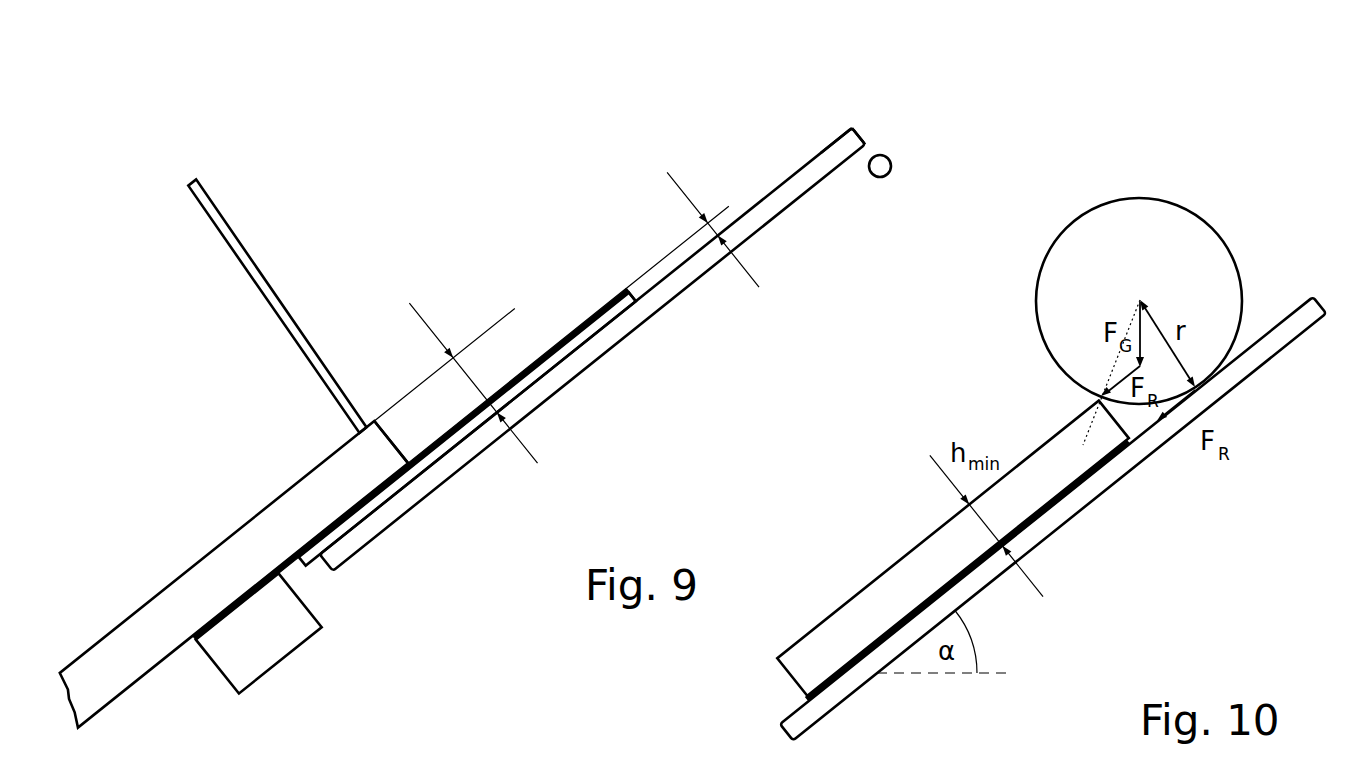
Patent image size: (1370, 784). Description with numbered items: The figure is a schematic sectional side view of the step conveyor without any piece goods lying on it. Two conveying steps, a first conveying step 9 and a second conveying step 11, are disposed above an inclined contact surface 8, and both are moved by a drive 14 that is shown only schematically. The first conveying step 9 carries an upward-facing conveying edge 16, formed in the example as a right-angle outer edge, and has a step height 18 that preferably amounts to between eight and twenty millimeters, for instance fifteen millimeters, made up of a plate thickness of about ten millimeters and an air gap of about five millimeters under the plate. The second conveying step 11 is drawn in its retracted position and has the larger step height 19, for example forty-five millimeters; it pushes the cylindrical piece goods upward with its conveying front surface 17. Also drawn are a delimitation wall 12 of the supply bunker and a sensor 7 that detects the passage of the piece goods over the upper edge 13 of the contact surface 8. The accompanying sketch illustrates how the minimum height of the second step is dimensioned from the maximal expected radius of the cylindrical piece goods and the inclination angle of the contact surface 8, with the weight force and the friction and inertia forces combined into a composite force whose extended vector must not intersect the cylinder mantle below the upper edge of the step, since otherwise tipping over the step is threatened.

The sensor 7 is at (880, 177).
The contact surface 8 is at (805, 165).
The first conveying step 9 is at (523, 378).
The second conveying step 11 is at (368, 462).
The delimitation wall 12 is at (230, 250).
The upper edge 13 is at (852, 122).
The drive 14 is at (305, 638).
The conveying edge 16 is at (627, 283).
The conveying front surface 17 is at (392, 437).
The step height 18 is at (703, 218).
The step height 19 is at (449, 350).